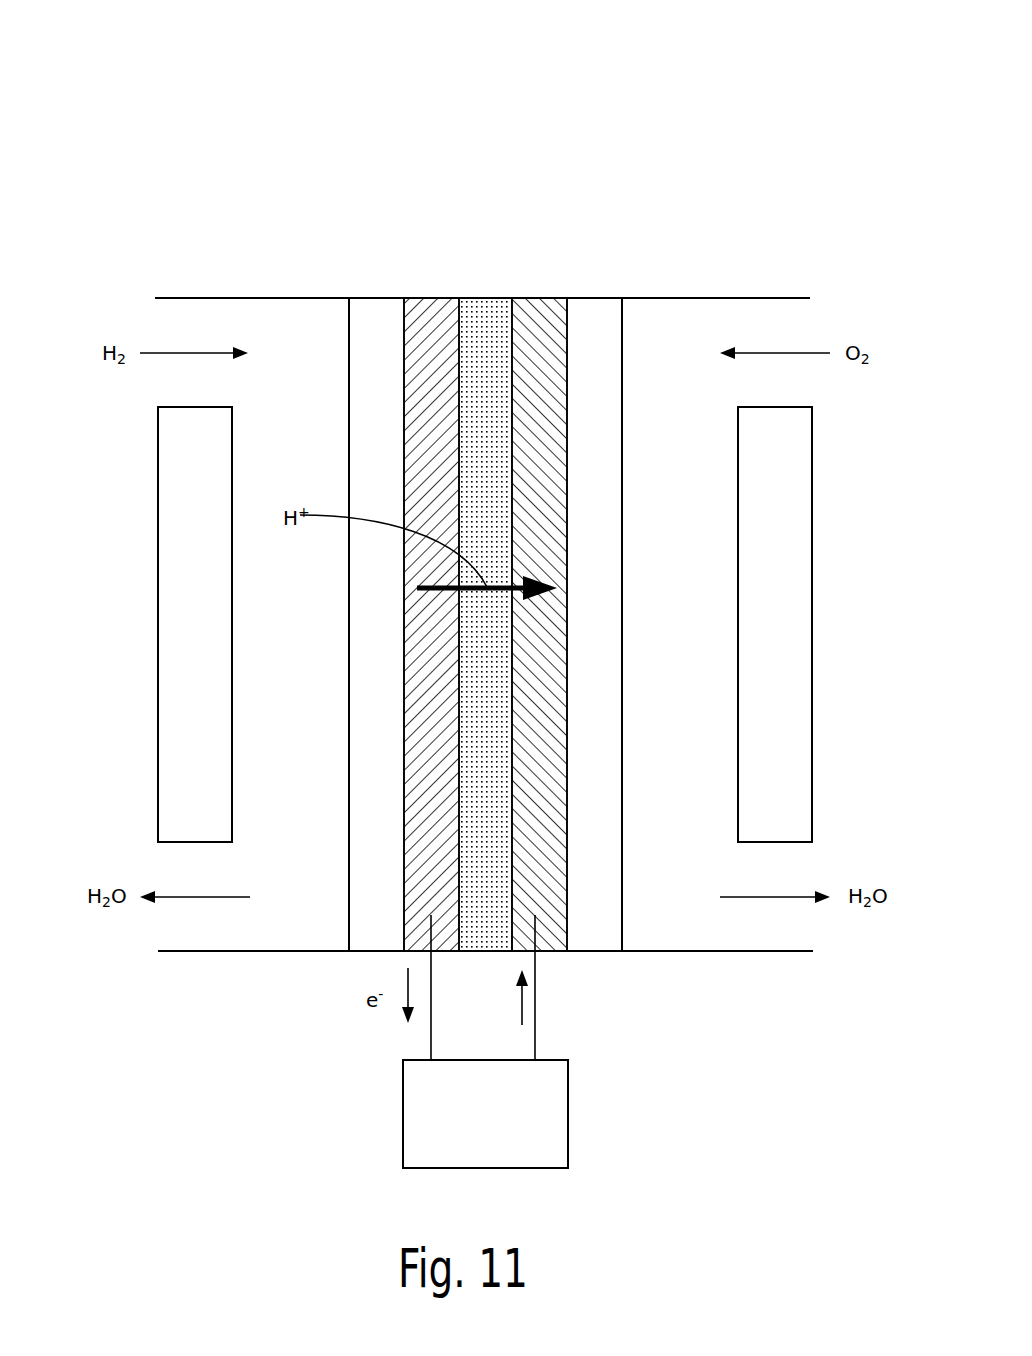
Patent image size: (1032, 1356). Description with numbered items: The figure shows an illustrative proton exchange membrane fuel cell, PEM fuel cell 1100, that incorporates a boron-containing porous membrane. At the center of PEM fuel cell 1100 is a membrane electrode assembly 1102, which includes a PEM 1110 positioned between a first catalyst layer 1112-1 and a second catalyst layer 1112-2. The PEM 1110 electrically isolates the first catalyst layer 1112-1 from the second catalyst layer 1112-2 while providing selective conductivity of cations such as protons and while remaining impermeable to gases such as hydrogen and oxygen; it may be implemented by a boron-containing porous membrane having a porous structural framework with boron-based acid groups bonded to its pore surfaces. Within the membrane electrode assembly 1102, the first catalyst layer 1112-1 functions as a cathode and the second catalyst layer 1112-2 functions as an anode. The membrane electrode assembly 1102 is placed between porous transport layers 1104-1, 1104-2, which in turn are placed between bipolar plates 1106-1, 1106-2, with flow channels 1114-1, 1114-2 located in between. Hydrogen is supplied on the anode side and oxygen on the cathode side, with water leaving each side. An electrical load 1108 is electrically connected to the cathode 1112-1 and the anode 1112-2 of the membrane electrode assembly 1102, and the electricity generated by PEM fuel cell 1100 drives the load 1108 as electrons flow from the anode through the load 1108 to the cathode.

The PEM fuel cell 1100 is at (176, 76).
The membrane electrode assembly 1102 is at (567, 172).
The porous transport layer 1104-1 is at (597, 298).
The porous transport layer 1104-2 is at (377, 298).
The bipolar plate 1106-1 is at (812, 578).
The bipolar plate 1106-2 is at (158, 578).
The electrical load 1108 is at (508, 1124).
The PEM 1110 is at (474, 298).
The first catalyst layer 1112-1 is at (540, 298).
The second catalyst layer 1112-2 is at (430, 298).
The flow channel 1114-1 is at (708, 671).
The flow channel 1114-2 is at (322, 671).